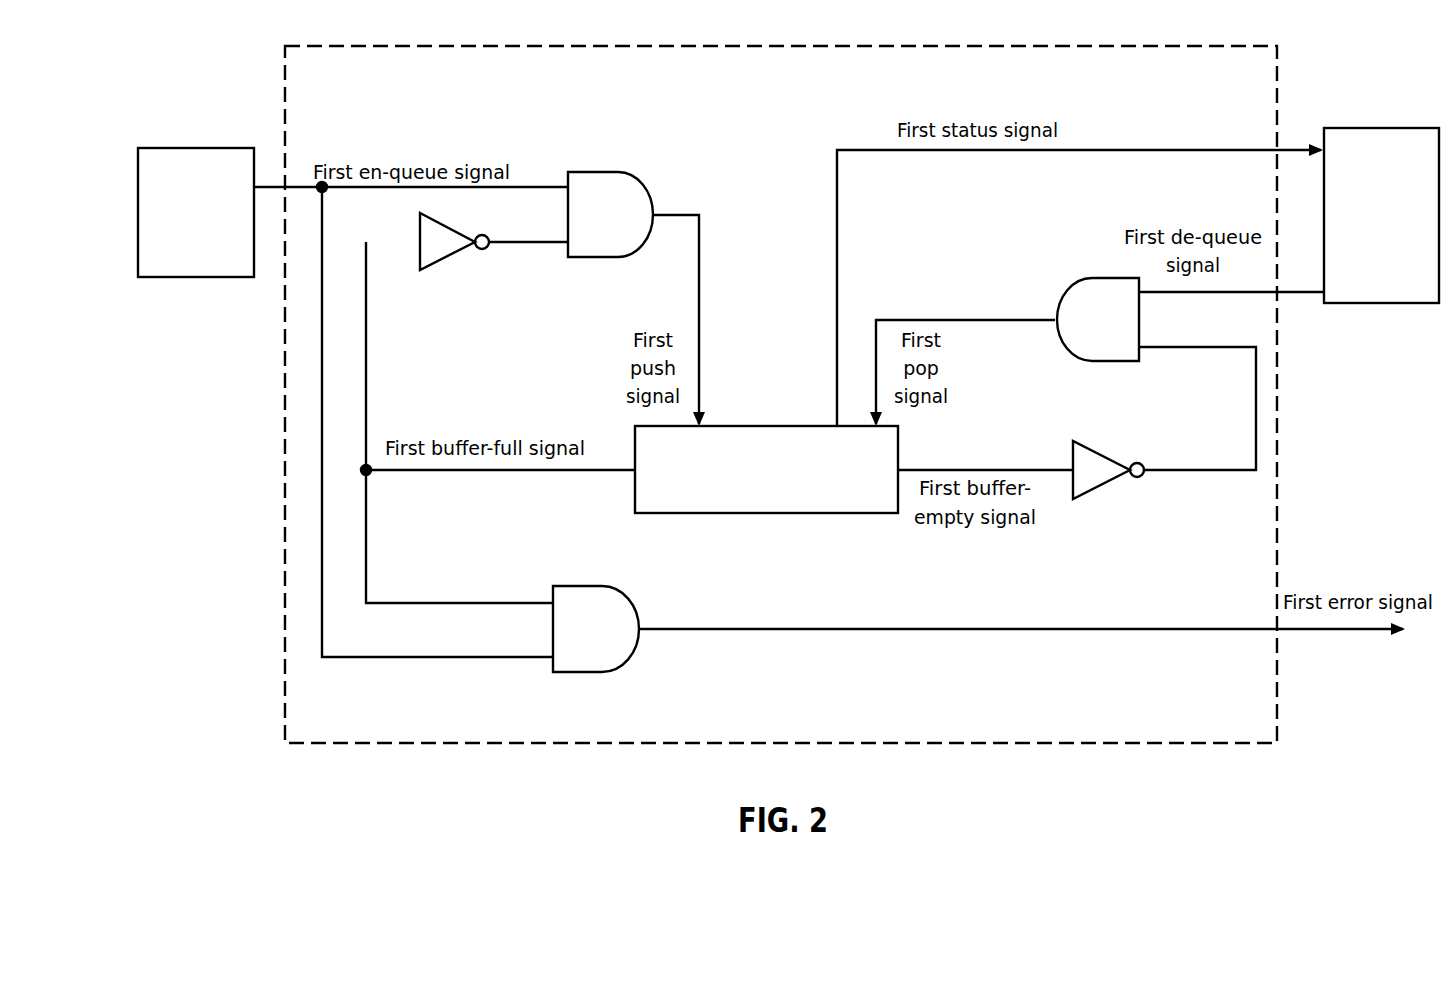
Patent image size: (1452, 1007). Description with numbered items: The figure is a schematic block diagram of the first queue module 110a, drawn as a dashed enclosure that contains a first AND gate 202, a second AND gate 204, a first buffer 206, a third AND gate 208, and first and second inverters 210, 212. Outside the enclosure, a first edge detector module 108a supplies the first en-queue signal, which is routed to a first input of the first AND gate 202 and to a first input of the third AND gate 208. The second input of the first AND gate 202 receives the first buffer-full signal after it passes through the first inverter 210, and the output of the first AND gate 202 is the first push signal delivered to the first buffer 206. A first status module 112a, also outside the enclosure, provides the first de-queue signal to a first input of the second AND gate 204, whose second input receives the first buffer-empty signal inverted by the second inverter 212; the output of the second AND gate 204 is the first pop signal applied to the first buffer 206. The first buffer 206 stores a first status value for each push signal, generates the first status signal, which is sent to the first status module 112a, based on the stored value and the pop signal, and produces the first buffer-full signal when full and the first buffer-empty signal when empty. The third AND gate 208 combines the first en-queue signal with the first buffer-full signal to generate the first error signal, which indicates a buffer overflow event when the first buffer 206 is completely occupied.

The first edge detector module 108a is at (198, 277).
The first queue module 110a is at (477, 743).
The first status module 112a is at (1382, 303).
The first AND gate 202 is at (612, 172).
The second AND gate 204 is at (1097, 277).
The first buffer 206 is at (767, 513).
The third AND gate 208 is at (595, 672).
The first inverter 210 is at (447, 260).
The second inverter 212 is at (1100, 485).